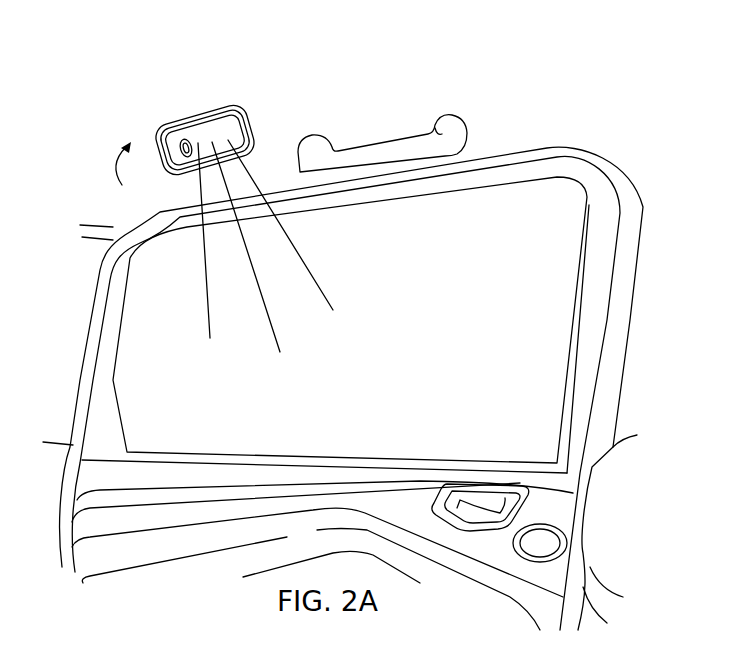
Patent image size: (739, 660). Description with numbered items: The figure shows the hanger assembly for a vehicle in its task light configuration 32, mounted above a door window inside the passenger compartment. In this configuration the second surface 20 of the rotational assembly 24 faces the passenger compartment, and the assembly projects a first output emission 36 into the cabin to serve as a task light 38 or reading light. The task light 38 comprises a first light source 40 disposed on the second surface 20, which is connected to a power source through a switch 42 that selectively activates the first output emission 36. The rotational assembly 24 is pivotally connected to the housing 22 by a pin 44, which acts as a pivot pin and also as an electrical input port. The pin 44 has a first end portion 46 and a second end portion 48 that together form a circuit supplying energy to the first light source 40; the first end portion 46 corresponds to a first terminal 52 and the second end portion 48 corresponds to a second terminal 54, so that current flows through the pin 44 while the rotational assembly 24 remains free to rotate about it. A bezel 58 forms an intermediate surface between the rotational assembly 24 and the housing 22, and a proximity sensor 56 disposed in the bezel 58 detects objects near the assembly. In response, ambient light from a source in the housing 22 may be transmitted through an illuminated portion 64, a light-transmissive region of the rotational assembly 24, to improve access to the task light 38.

The second surface 20 is at (203, 133).
The housing 22 is at (187, 173).
The rotational assembly 24 is at (227, 143).
The task light configuration 32 is at (281, 107).
The first output emission 36 is at (307, 278).
The task light 38 is at (233, 108).
The first light source 40 is at (211, 133).
The switch 42 is at (165, 123).
The pin 44 is at (243, 133).
The first end portion 46 is at (110, 126).
The first terminal 52 is at (157, 140).
The second end portion 48 is at (282, 85).
The second terminal 54 is at (240, 113).
The proximity sensor 56 is at (192, 110).
The bezel 58 is at (173, 110).
The illuminated portion 64 is at (158, 125).